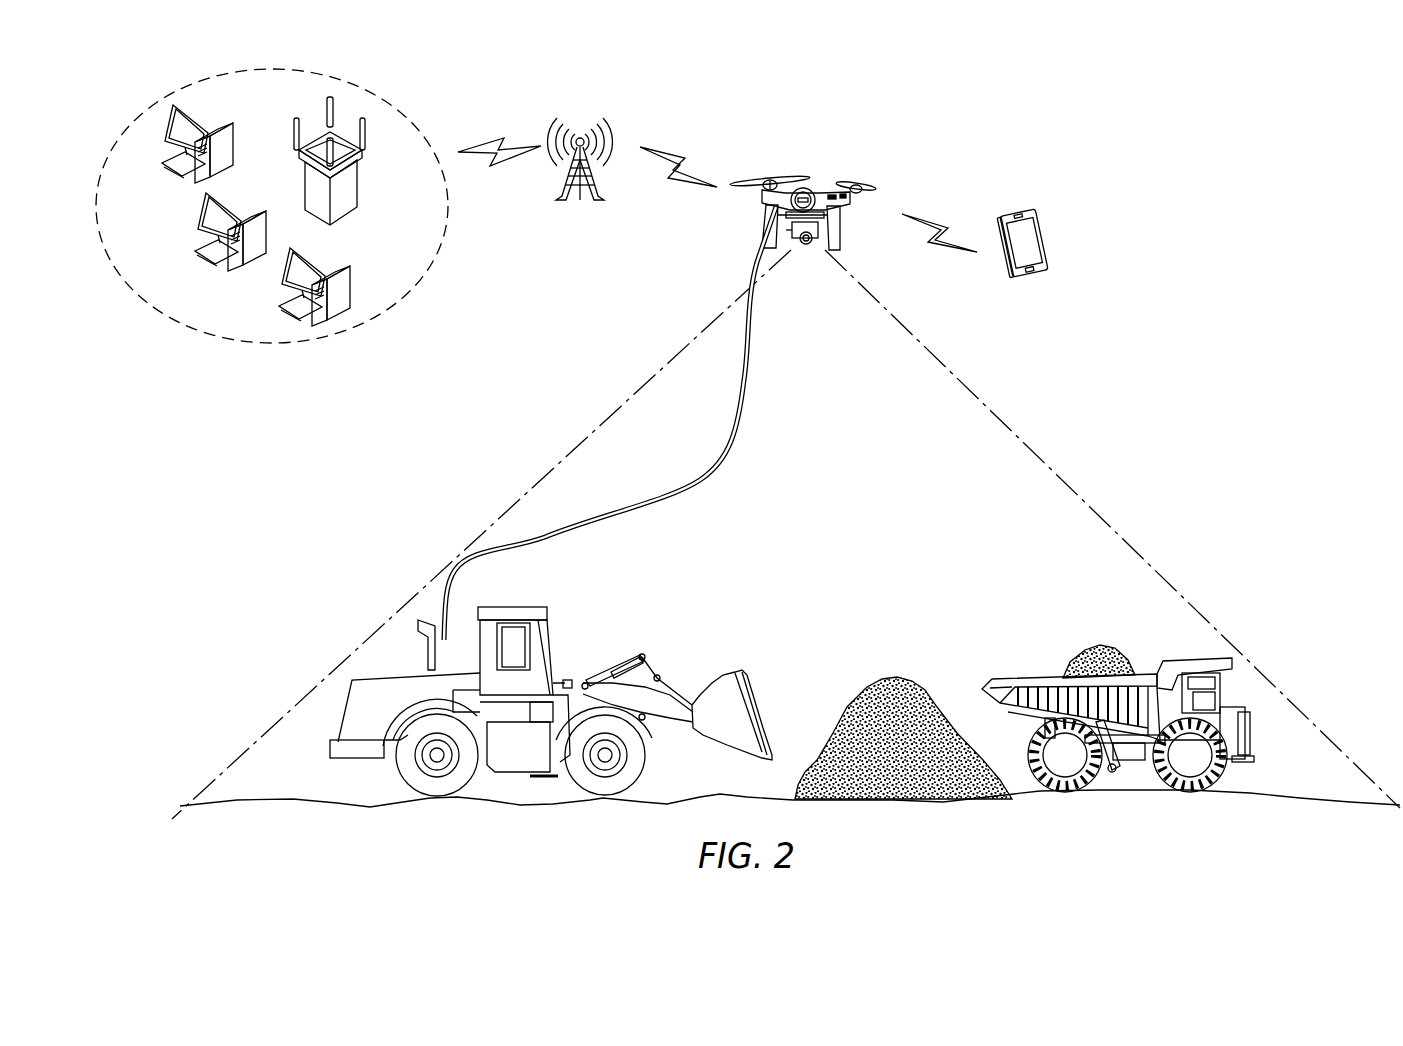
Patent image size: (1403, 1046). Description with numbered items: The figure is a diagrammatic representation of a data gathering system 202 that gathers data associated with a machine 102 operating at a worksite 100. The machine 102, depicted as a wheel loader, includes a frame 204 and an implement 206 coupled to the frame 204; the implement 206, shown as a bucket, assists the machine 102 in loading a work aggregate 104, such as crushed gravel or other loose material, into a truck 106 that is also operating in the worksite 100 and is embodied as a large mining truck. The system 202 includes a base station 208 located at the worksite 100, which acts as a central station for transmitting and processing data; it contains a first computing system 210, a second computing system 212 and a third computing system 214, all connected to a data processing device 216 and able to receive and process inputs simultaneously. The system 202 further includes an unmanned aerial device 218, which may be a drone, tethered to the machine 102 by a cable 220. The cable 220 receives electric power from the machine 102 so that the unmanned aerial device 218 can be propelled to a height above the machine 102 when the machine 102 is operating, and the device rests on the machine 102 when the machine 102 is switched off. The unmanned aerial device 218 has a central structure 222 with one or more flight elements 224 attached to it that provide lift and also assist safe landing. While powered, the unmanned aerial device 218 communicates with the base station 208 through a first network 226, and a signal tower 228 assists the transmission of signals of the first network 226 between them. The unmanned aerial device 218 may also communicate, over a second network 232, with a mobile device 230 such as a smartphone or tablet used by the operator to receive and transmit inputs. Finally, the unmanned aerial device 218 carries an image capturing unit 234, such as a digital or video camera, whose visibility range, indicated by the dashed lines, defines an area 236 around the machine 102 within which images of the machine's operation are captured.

The worksite 100 is at (1222, 528).
The machine 102 is at (551, 655).
The work aggregate 104 is at (893, 675).
The truck 106 is at (1143, 637).
The data gathering system 202 is at (1143, 117).
The frame 204 is at (567, 695).
The implement 206 is at (737, 682).
The base station 208 is at (418, 287).
The first computing system 210 is at (182, 170).
The second computing system 212 is at (214, 258).
The third computing system 214 is at (337, 303).
The data processing device 216 is at (340, 212).
The unmanned aerial device 218 is at (828, 197).
The cable 220 is at (725, 450).
The central structure 222 is at (817, 184).
The flight elements 224 is at (768, 178).
The first network 226 is at (653, 142).
The signal tower 228 is at (580, 195).
The mobile device 230 is at (1028, 240).
The second network 232 is at (957, 195).
The image capturing unit 234 is at (798, 248).
The area 236 is at (950, 438).